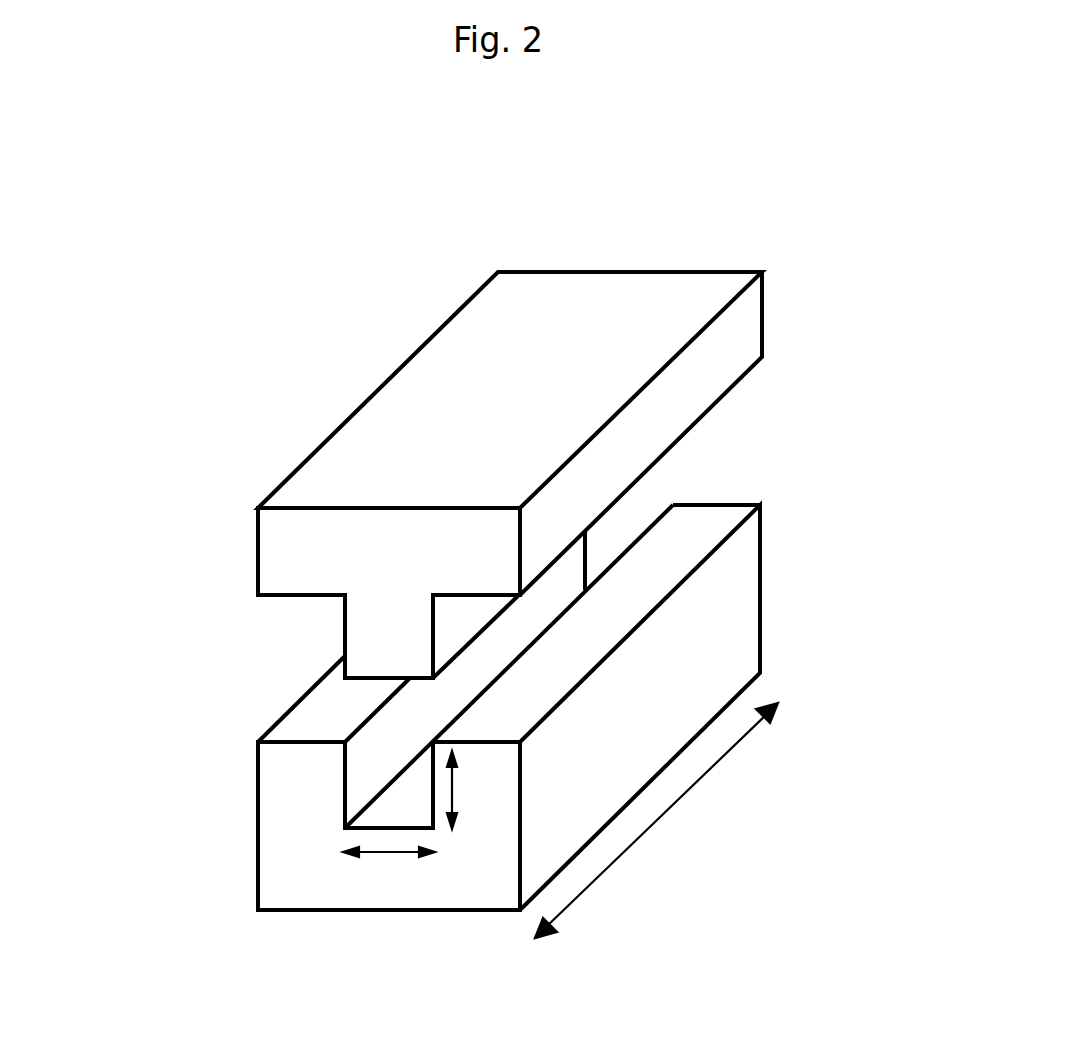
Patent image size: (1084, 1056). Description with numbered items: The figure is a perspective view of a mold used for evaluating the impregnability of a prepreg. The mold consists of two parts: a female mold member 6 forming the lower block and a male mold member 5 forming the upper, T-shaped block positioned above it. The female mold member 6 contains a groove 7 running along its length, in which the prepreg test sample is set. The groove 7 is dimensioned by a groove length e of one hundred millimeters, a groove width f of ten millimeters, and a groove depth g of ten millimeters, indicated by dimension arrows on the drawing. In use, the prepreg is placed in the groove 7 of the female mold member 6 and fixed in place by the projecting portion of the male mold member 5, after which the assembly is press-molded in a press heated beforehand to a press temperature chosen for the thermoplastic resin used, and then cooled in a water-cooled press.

The male mold member 5 is at (742, 345).
The female mold member 6 is at (735, 640).
The groove 7 is at (333, 817).
The groove depth g is at (473, 790).
The groove width f is at (383, 852).
The groove length e is at (656, 820).